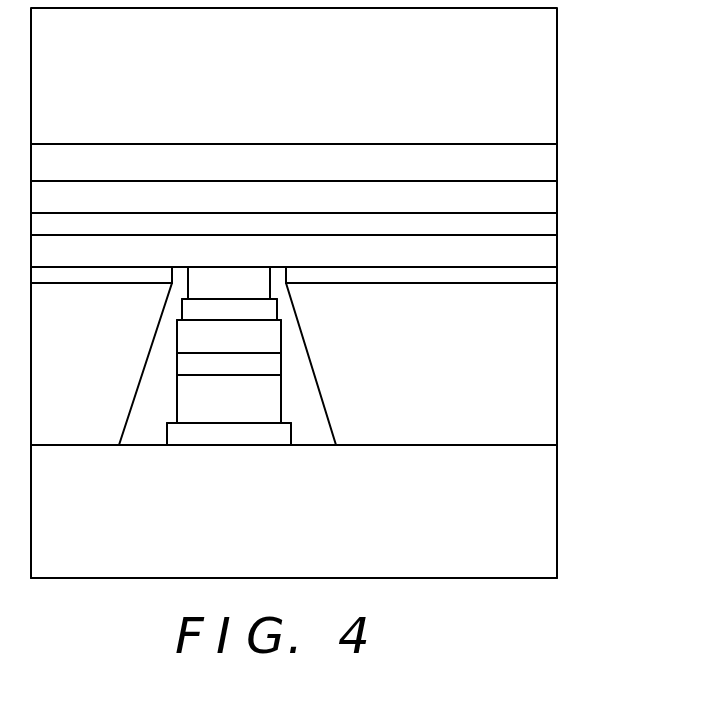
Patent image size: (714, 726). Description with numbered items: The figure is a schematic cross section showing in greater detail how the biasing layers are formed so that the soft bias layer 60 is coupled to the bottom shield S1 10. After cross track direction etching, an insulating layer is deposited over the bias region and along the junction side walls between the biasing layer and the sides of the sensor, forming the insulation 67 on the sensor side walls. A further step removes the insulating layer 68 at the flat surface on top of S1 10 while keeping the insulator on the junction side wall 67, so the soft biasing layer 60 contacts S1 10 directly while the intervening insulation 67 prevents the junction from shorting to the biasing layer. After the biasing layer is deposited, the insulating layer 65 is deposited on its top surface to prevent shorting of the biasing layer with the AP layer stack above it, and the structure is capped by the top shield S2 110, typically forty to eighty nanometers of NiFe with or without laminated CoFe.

The top shield 110 is at (547, 78).
The insulating layer 65 is at (547, 278).
The junction side wall insulation 67 is at (292, 326).
The soft bias layer 60 is at (547, 357).
The insulating layer at flat surface on top of S1 68 is at (515, 445).
The bottom shield S1 10 is at (547, 511).